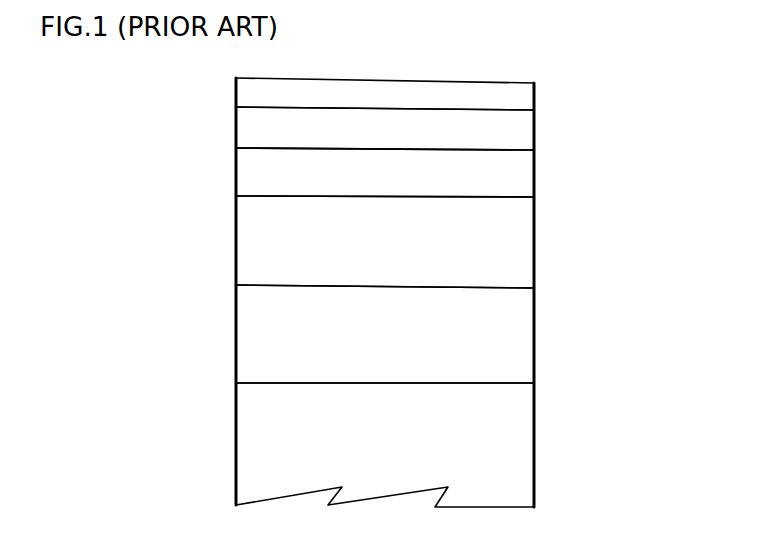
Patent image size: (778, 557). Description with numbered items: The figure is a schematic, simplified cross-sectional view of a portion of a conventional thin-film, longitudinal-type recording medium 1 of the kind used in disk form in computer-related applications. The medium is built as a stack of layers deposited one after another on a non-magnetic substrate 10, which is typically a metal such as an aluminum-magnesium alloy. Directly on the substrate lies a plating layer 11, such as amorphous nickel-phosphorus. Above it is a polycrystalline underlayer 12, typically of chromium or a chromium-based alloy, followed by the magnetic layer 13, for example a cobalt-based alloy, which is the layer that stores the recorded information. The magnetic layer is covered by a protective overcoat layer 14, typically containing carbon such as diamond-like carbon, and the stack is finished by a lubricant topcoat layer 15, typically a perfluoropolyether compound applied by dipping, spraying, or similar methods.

The thin-film, longitudinal-type recording medium 1 is at (614, 155).
The non-magnetic substrate 10 is at (537, 455).
The plating layer 11 is at (536, 343).
The polycrystalline underlayer 12 is at (536, 251).
The magnetic layer 13 is at (536, 178).
The protective overcoat layer 14 is at (536, 132).
The lubricant topcoat layer 15 is at (536, 100).